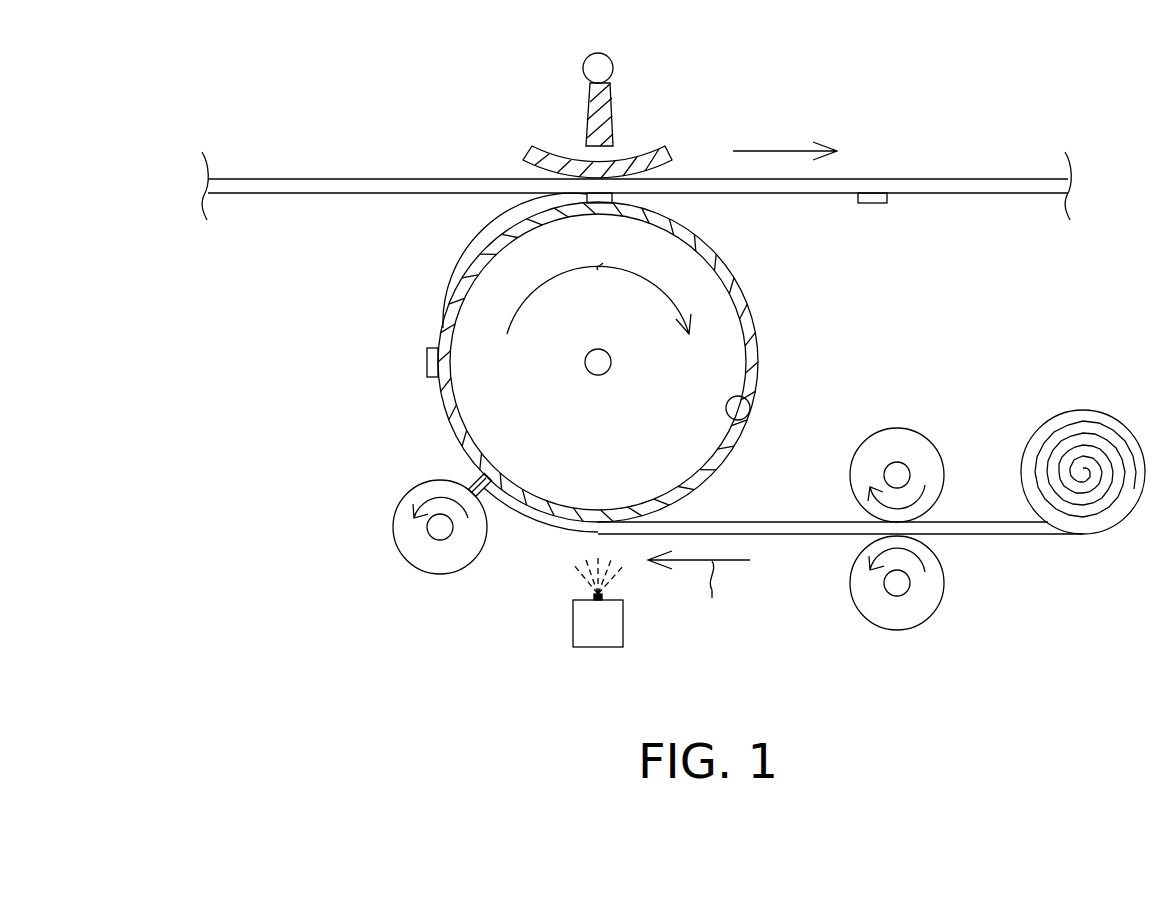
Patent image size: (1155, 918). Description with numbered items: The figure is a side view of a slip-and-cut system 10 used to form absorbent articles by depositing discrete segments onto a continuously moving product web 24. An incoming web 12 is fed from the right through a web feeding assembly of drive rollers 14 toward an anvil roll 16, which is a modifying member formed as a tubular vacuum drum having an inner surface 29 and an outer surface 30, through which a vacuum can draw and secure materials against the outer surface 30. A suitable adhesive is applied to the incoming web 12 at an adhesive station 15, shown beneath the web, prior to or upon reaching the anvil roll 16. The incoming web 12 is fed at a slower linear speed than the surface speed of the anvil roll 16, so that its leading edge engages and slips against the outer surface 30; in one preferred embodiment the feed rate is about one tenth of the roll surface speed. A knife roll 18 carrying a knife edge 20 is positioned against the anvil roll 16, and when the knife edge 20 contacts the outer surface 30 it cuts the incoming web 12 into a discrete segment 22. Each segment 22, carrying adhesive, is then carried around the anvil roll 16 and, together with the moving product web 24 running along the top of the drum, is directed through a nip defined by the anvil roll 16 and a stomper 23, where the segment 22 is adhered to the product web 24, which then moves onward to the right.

The slip-and-cut system 10 is at (270, 126).
The incoming web 12 is at (1100, 535).
The drive rollers 14 is at (973, 455).
The adhesive station 15 is at (590, 647).
The anvil roll 16 is at (758, 335).
The knife roll 18 is at (458, 574).
The knife edge 20 is at (478, 482).
The segment 22 is at (585, 197).
The stomper 23 is at (546, 146).
The product web 24 is at (357, 179).
The inner surface 29 is at (740, 421).
The outer surface 30 is at (760, 358).